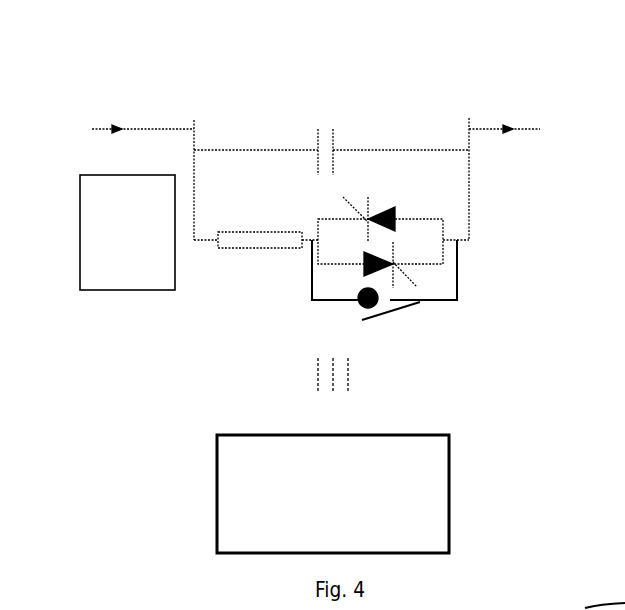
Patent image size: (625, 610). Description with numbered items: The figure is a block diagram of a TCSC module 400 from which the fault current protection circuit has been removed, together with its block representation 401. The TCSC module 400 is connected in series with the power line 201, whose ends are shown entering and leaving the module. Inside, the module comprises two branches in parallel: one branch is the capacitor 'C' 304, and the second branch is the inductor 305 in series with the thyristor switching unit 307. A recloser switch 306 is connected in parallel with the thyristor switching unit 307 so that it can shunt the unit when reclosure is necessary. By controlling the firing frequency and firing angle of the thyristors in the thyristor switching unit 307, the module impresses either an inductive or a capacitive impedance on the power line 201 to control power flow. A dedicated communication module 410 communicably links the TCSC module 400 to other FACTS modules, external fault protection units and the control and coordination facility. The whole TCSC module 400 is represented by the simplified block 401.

The TCSC module 400 is at (218, 73).
The power line 201 is at (118, 128).
The capacitor 304 is at (326, 131).
The inductor 305 is at (243, 247).
The recloser switch 306 is at (362, 308).
The thyristor switching unit 307 is at (405, 248).
The communication module 410 is at (80, 248).
The block representation 401 is at (405, 433).